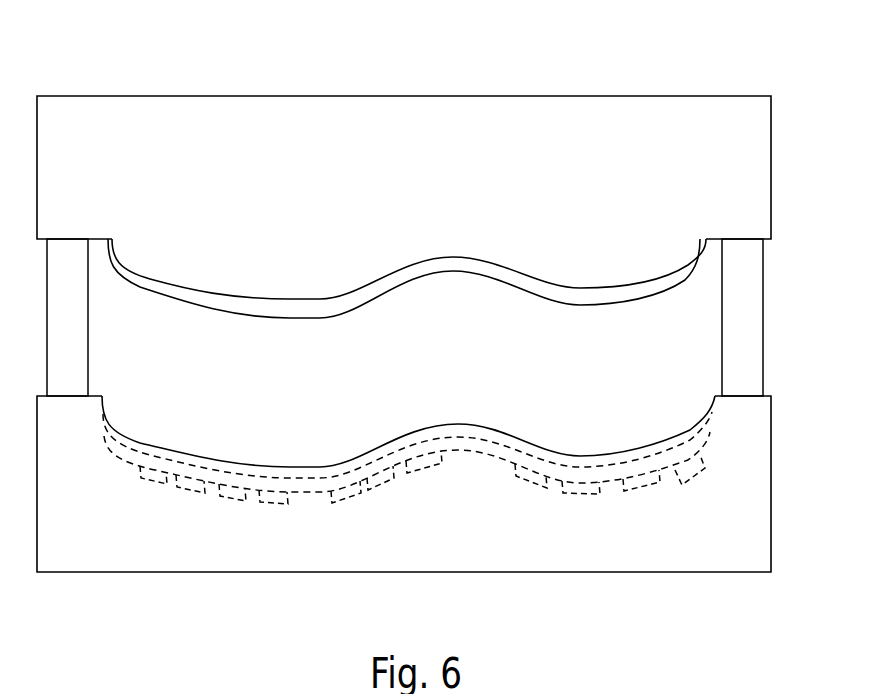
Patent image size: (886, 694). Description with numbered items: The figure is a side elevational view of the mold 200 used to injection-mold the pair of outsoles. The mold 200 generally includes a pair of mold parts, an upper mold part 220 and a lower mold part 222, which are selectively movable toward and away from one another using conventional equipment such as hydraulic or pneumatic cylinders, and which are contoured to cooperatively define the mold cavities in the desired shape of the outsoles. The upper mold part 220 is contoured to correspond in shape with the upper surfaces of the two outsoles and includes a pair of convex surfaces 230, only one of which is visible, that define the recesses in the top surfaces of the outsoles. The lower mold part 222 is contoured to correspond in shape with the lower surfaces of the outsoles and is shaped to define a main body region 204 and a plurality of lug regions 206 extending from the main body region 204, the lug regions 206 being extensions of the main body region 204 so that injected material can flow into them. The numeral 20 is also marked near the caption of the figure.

The mold 200 is at (150, 94).
The upper mold part 220 is at (771, 152).
The convex surfaces 230 is at (689, 282).
The lower mold part 222 is at (771, 489).
The main body region 204 is at (640, 474).
The lug regions 206 is at (650, 492).
The footwear element 20 is at (552, 693).